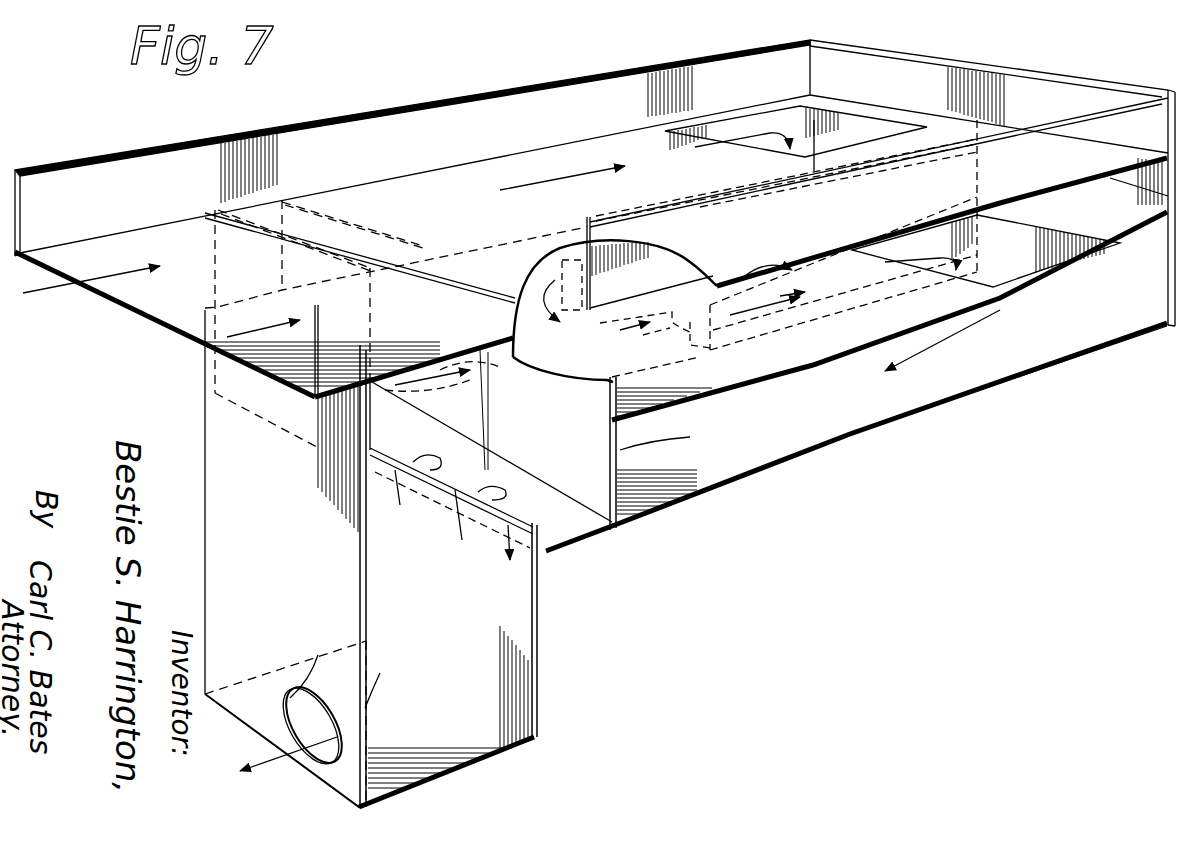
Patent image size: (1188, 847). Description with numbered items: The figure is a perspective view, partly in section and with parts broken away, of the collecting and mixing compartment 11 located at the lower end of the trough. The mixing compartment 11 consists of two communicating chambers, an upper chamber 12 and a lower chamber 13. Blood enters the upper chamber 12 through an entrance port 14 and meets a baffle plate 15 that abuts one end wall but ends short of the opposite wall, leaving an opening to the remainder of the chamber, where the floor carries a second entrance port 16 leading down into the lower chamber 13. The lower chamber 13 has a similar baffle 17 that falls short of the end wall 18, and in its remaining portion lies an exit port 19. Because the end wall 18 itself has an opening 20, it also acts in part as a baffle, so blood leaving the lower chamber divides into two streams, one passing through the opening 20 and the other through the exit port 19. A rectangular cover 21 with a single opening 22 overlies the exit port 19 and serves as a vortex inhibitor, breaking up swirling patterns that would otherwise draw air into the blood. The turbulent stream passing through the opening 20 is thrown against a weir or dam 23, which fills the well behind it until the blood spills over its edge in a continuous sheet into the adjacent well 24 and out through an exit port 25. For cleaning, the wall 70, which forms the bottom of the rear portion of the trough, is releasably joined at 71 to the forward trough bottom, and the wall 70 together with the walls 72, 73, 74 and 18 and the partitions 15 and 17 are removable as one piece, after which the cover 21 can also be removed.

The mixing compartment 11 is at (805, 455).
The upper chamber 12 is at (795, 340).
The lower chamber 13 is at (963, 390).
The entrance port 14 is at (763, 125).
The baffle plate 15 is at (665, 262).
The second entrance port 16 is at (1047, 262).
The baffle 17 is at (737, 389).
The end wall 18 is at (592, 490).
The exit port 19 is at (783, 272).
The opening 20 is at (452, 375).
The cover 21 is at (692, 338).
The opening 22 is at (660, 330).
The weir 23 is at (512, 528).
The well 24 is at (488, 738).
The exit port 25 is at (300, 715).
The wall 70 is at (472, 183).
The releasable joint 71 is at (352, 230).
The wall 72 is at (1160, 215).
The wall 73 is at (703, 395).
The wall 74 is at (728, 478).